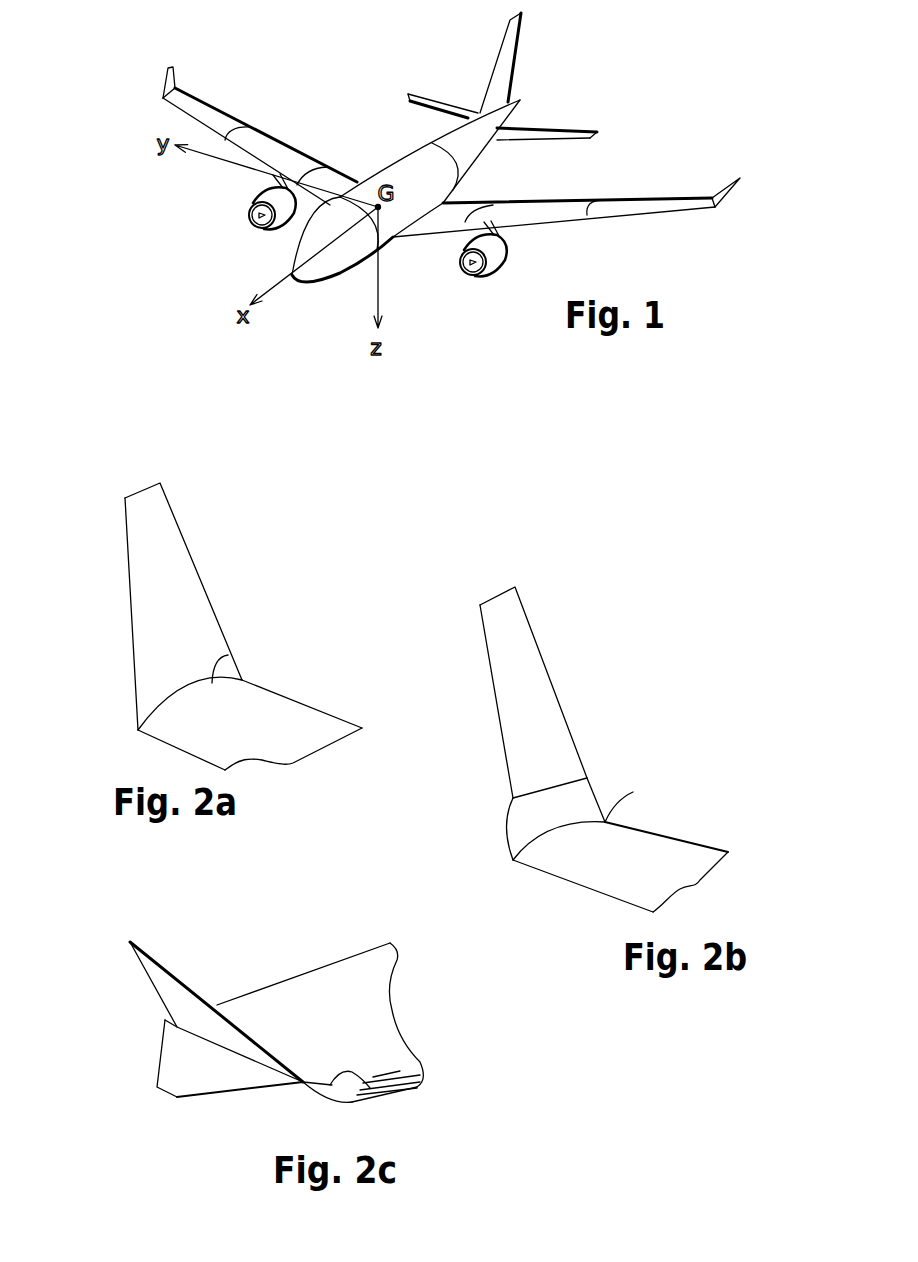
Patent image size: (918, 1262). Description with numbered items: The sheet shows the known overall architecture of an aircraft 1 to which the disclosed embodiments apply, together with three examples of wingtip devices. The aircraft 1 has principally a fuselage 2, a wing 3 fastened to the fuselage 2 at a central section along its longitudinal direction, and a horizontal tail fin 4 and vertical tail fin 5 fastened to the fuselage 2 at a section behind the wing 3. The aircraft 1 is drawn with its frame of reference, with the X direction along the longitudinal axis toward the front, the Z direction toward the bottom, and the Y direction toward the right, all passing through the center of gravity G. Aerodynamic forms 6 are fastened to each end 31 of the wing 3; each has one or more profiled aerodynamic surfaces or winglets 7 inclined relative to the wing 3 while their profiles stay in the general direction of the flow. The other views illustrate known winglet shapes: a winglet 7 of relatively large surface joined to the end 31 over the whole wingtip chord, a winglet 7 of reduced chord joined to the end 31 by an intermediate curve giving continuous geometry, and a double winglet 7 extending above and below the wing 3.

In FIG. 1, the aircraft 1 is at (361, 105).
In FIG. 1, the fuselage 2 is at (407, 163).
In FIG. 1, the wing 3 is at (227, 125).
In FIG. 2A, the wing 3 is at (283, 728).
In FIG. 2B, the wing 3 is at (660, 873).
In FIG. 2C, the wing 3 is at (323, 992).
In FIG. 1, the end of the wing 31 is at (160, 104).
In FIG. 2A, the end of the wing 31 is at (228, 655).
In FIG. 2B, the end of the wing 31 is at (633, 792).
In FIG. 2C, the end of the wing 31 is at (370, 1088).
In FIG. 1, the horizontal tail fin 4 is at (565, 132).
In FIG. 1, the vertical tail fin 5 is at (513, 49).
In FIG. 1, the aerodynamic forms 6 is at (150, 87).
In FIG. 2A, the aerodynamic forms 6 is at (108, 620).
In FIG. 2B, the aerodynamic forms 6 is at (623, 673).
In FIG. 2C, the aerodynamic forms 6 is at (145, 1033).
In FIG. 2A, the winglet 7 is at (195, 607).
In FIG. 2B, the winglet 7 is at (520, 615).
In FIG. 2C, the winglet 7 is at (173, 985).